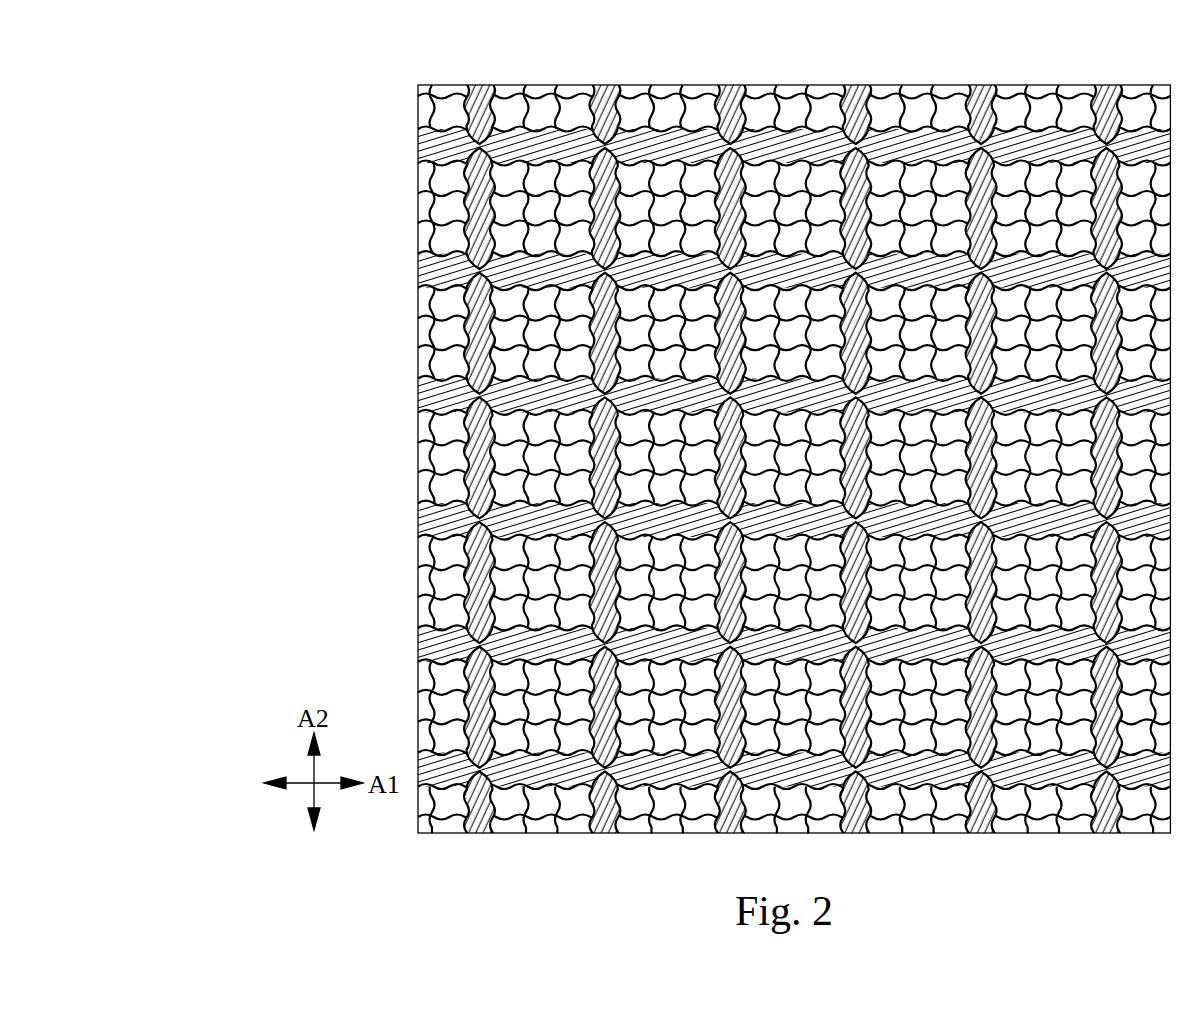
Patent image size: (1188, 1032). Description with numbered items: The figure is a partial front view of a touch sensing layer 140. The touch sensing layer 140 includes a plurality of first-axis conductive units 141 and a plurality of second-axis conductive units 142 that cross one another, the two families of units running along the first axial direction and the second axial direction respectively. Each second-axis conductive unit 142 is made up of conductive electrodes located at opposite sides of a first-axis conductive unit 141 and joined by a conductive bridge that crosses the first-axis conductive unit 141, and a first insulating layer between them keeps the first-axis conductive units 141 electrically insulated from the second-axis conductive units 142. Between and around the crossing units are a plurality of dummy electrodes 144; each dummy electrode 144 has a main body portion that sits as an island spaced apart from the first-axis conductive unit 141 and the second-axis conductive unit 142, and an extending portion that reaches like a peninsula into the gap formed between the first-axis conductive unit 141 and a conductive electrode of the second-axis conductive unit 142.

The touch sensing layer 140 is at (277, 40).
The first-axis conductive unit 141 is at (422, 392).
The second-axis conductive unit 142 is at (608, 88).
The dummy electrode 144 is at (570, 362).